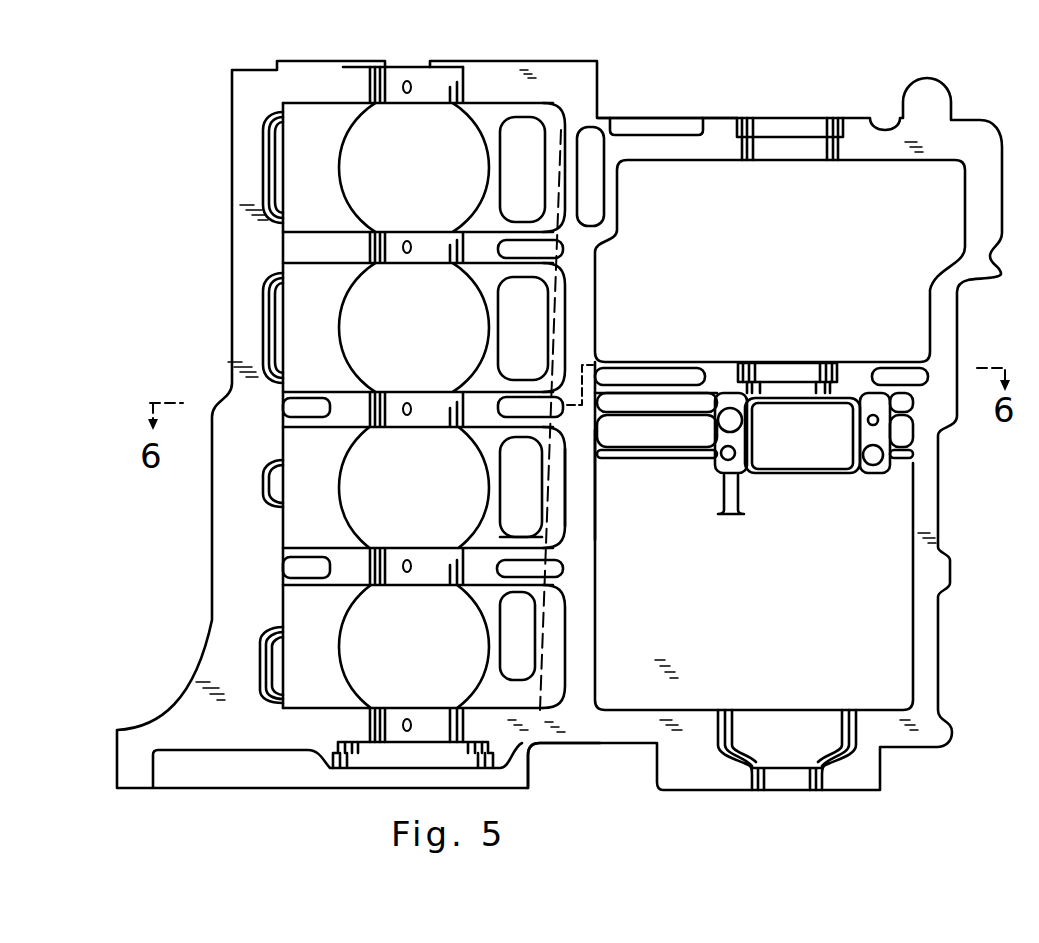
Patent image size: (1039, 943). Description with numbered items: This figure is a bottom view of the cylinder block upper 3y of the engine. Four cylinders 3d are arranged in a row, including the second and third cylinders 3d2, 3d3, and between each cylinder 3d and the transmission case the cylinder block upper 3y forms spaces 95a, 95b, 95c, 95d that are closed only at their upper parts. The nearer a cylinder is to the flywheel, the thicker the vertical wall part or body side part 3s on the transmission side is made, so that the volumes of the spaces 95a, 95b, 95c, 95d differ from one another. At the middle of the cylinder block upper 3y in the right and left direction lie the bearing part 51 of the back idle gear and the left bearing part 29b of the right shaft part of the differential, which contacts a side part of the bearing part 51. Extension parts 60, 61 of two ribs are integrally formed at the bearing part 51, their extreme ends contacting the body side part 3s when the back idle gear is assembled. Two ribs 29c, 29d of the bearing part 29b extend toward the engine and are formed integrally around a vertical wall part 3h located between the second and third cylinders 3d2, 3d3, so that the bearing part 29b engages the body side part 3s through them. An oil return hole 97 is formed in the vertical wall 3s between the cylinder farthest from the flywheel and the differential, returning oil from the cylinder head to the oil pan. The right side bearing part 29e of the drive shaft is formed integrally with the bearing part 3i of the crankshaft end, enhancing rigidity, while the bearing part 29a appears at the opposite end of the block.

The cylinder 3d is at (352, 140).
The second cylinder 3d2 is at (352, 297).
The third cylinder 3d3 is at (352, 455).
The vertical wall part 3h is at (521, 428).
The body side part 3s is at (577, 477).
The bearing part 3i is at (512, 732).
The cylinder block upper 3y is at (680, 90).
The upper bearing boss 29a is at (848, 130).
The left bearing part 29b is at (790, 373).
The rib 29c is at (667, 372).
The rib 29d is at (627, 388).
The right side bearing part 29e is at (712, 748).
The bearing part 51 is at (740, 480).
The extension part 60 is at (685, 452).
The extension part 61 is at (633, 420).
The space 95a is at (517, 650).
The space 95b is at (527, 517).
The space 95c is at (538, 302).
The space 95d is at (522, 133).
The oil return hole 97 is at (597, 192).